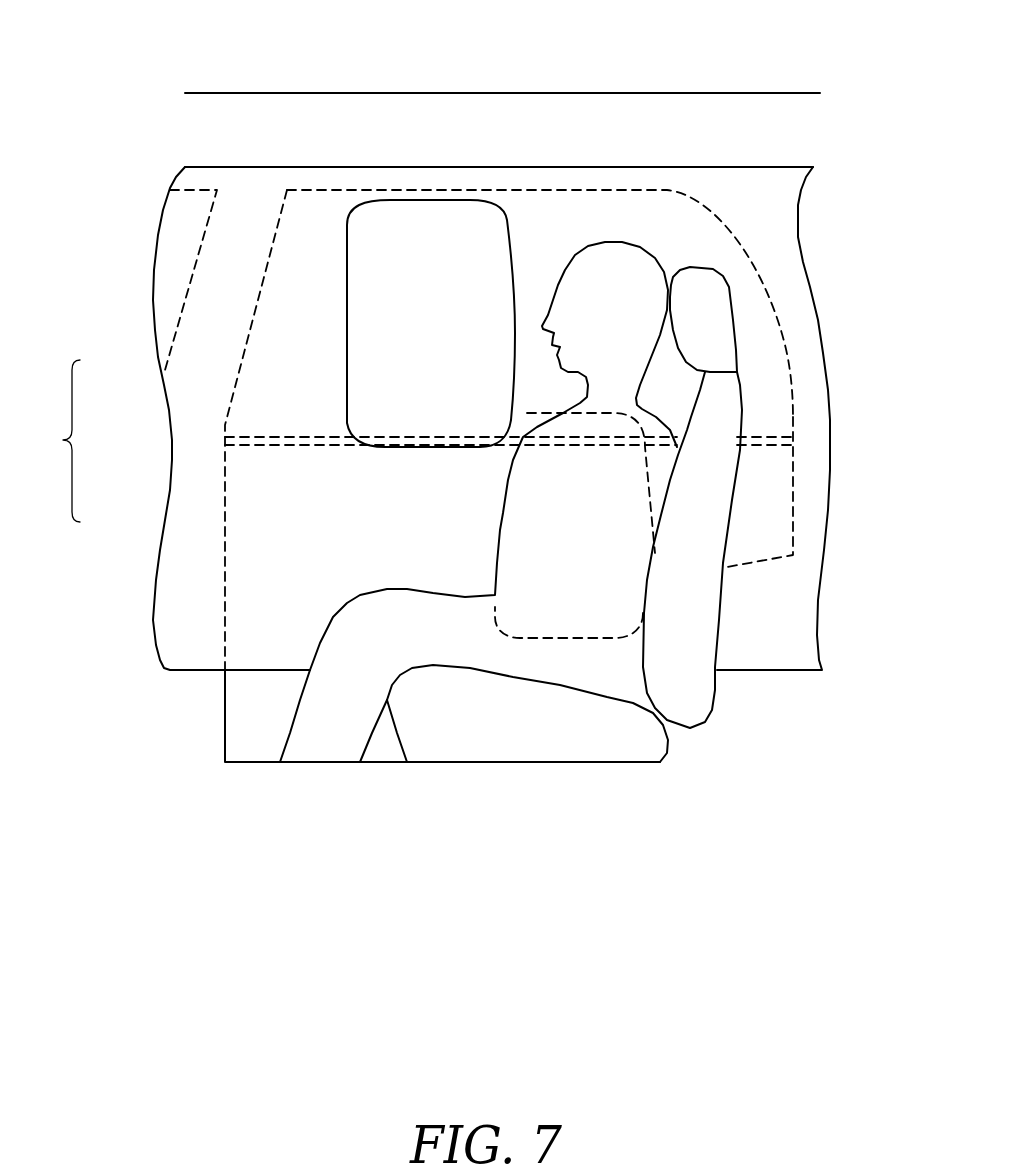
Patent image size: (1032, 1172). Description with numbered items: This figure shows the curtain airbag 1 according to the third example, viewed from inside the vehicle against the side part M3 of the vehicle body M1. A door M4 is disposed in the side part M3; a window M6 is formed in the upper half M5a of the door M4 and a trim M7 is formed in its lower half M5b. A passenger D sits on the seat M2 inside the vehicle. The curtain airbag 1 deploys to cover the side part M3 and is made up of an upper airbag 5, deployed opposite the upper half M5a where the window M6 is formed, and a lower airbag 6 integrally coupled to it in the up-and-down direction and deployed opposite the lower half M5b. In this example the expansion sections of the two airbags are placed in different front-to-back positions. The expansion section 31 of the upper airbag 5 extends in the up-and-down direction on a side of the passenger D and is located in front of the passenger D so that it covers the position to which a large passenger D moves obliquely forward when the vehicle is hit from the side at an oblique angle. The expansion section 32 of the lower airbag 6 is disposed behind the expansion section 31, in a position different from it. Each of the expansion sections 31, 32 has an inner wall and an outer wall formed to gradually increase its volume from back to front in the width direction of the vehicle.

The curtain airbag 1 is at (450, 167).
The upper airbag 5 is at (297, 233).
The lower airbag 6 is at (198, 652).
The expansion section 31 is at (420, 352).
The expansion section 32 is at (497, 521).
The passenger D is at (640, 243).
The vehicle body M1 is at (270, 93).
The seat M2 is at (728, 287).
The side part M3 is at (88, 288).
The door M4 is at (47, 441).
The upper half M5a is at (847, 190).
The lower half M5b is at (863, 438).
The window M6 is at (247, 418).
The trim M7 is at (245, 495).